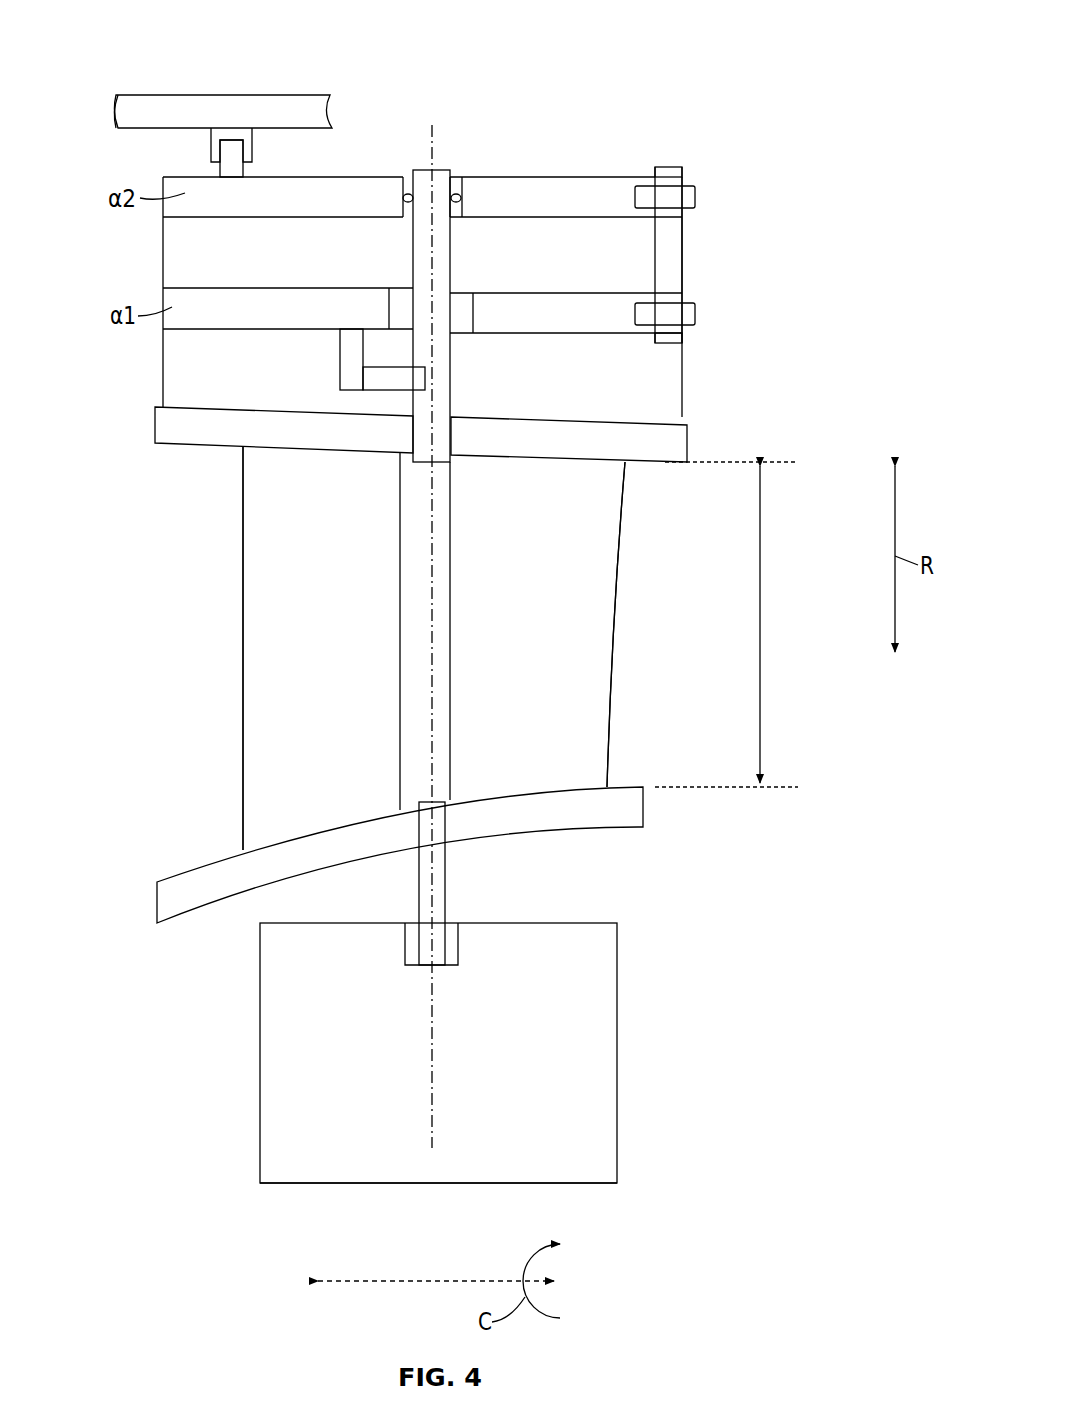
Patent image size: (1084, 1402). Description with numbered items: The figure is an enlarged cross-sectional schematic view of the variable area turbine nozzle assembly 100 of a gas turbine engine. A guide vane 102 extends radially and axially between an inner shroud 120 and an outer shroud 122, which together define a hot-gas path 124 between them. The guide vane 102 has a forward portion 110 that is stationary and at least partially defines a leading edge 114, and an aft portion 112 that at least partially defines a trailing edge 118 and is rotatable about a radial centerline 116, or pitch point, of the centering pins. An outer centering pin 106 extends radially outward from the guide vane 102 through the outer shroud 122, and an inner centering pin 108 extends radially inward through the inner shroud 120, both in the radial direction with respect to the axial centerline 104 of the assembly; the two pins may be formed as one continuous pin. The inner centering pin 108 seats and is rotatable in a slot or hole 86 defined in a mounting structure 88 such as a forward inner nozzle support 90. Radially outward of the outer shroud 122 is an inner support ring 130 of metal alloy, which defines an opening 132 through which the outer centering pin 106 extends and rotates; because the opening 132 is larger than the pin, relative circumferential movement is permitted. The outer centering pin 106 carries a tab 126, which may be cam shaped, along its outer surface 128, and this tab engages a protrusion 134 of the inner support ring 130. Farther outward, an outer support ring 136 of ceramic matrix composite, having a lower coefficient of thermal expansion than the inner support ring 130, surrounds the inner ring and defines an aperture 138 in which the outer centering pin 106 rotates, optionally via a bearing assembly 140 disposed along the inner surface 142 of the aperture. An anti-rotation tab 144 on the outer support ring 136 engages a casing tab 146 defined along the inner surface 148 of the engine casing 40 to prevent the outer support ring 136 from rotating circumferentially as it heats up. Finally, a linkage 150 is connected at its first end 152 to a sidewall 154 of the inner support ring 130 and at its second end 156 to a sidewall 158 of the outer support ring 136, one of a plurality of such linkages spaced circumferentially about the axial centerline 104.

The engine casing 40 is at (162, 95).
The slot or hole 86 is at (470, 938).
The mounting structure 88 is at (258, 1068).
The forward inner nozzle support 90 is at (373, 1107).
The variable area turbine nozzle assembly 100 is at (662, 86).
The guide vane 102 is at (417, 648).
The axial centerline 104 is at (430, 1278).
The outer centering pin 106 is at (452, 250).
The inner centering pin 108 is at (446, 880).
The forward portion 110 is at (334, 622).
The aft portion 112 is at (554, 640).
The leading edge 114 is at (243, 705).
The radial centerline 116 is at (440, 128).
The trailing edge 118 is at (610, 695).
The inner shroud 120 is at (633, 800).
The outer shroud 122 is at (688, 437).
The hot-gas path 124 is at (762, 582).
The tab 126 is at (380, 372).
The outer surface 128 is at (443, 364).
The inner support ring 130 is at (302, 320).
The opening 132 is at (468, 298).
The protrusion 134 is at (345, 350).
The outer support ring 136 is at (569, 210).
The aperture 138 is at (408, 178).
The bearing assembly 140 is at (462, 180).
The inner surface 142 is at (462, 212).
The anti-rotation tab 144 is at (236, 171).
The casing tab 146 is at (213, 136).
The inner surface 148 is at (138, 128).
The linkage 150 is at (685, 259).
The first end 152 is at (670, 348).
The sidewall 154 is at (655, 293).
The second end 156 is at (688, 172).
The sidewall 158 is at (652, 180).